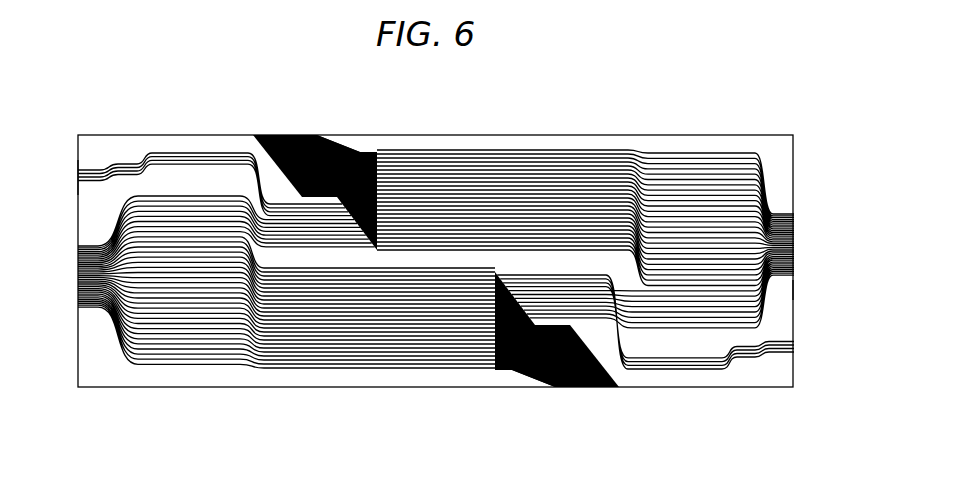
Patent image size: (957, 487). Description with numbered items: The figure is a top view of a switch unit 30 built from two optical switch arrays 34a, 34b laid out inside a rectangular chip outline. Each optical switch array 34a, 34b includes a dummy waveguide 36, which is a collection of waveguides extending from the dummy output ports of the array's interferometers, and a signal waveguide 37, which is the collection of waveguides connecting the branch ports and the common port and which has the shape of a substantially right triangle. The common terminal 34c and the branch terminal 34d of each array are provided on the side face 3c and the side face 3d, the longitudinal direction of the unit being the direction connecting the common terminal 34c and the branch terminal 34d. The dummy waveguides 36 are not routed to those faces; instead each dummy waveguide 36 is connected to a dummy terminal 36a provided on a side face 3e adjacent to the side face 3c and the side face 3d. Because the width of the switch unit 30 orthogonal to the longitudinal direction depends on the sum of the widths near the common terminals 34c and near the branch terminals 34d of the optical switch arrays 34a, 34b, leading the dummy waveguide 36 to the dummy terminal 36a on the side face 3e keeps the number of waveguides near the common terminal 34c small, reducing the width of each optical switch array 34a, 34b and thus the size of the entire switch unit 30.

The switch unit 30 is at (637, 135).
The optical switch array 34a is at (304, 386).
The optical switch array 34b is at (543, 143).
The common terminal 34c is at (72, 164).
The branch terminal 34d is at (74, 304).
The dummy waveguide 36 is at (336, 152).
The dummy terminal 36a is at (278, 126).
The signal waveguide 37 is at (170, 152).
The side face 3c is at (796, 280).
The side face 3d is at (76, 188).
The side face 3e is at (444, 266).